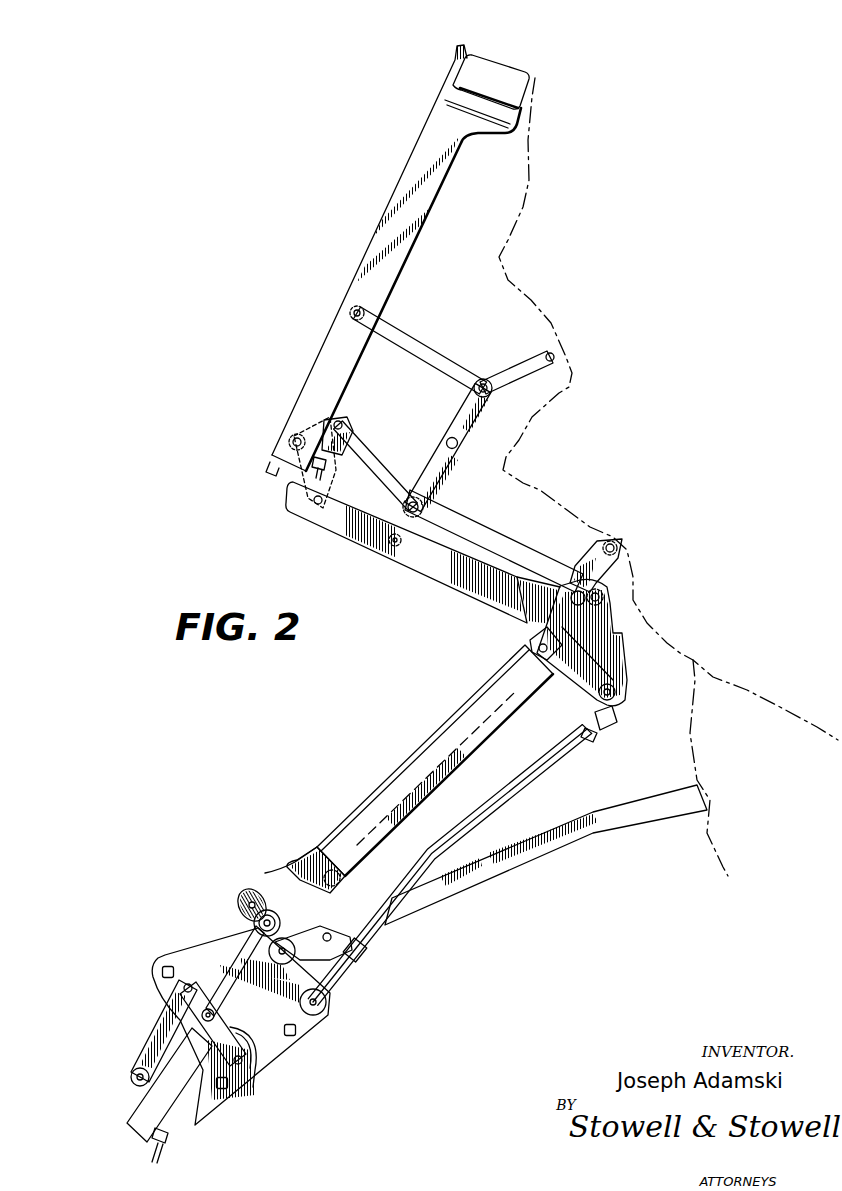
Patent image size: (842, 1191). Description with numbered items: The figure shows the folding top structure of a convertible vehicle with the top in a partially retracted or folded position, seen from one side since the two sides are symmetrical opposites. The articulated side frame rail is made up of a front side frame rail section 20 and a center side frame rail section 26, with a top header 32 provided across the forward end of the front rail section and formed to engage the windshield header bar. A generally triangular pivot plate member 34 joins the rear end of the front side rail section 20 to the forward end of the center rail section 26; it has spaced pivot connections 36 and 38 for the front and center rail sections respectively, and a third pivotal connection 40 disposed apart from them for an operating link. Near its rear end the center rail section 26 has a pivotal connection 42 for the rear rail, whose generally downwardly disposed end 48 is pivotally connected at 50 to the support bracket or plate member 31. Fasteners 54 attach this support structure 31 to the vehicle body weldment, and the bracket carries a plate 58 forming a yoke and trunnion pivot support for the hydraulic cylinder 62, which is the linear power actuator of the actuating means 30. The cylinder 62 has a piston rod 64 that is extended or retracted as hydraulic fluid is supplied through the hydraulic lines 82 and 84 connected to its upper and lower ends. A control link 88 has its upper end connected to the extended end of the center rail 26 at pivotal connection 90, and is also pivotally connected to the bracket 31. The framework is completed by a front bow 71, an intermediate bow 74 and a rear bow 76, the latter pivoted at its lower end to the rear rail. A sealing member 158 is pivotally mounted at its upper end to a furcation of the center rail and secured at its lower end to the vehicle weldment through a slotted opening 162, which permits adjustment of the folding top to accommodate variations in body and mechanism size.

The front side frame rail section 20 is at (386, 216).
The top header 32 is at (510, 75).
The front bow 71 is at (520, 363).
The pivot connection 36 is at (293, 438).
The third pivotal connection 40 is at (345, 425).
The pivot plate member 34 is at (407, 487).
The pivot connection 38 is at (308, 503).
The center side frame rail section 26 is at (423, 560).
The intermediate bow 74 is at (596, 548).
The pivotal connection 42 is at (532, 646).
The pivotal connection 90 is at (620, 697).
The sealing member 158 is at (372, 790).
The control link 88 is at (577, 757).
The slotted opening 162 is at (332, 880).
The rear bow 76 is at (612, 830).
The downwardly disposed end 48 is at (255, 893).
The piston rod 64 is at (227, 970).
The pivotal connection 50 is at (256, 928).
The fasteners 54 is at (168, 963).
The plate 58 is at (190, 997).
The actuating means 30 is at (128, 1040).
The hydraulic cylinder 62 is at (143, 1110).
The hydraulic line 82 is at (255, 1088).
The plate member 31 is at (280, 1050).
The hydraulic line 84 is at (168, 1140).